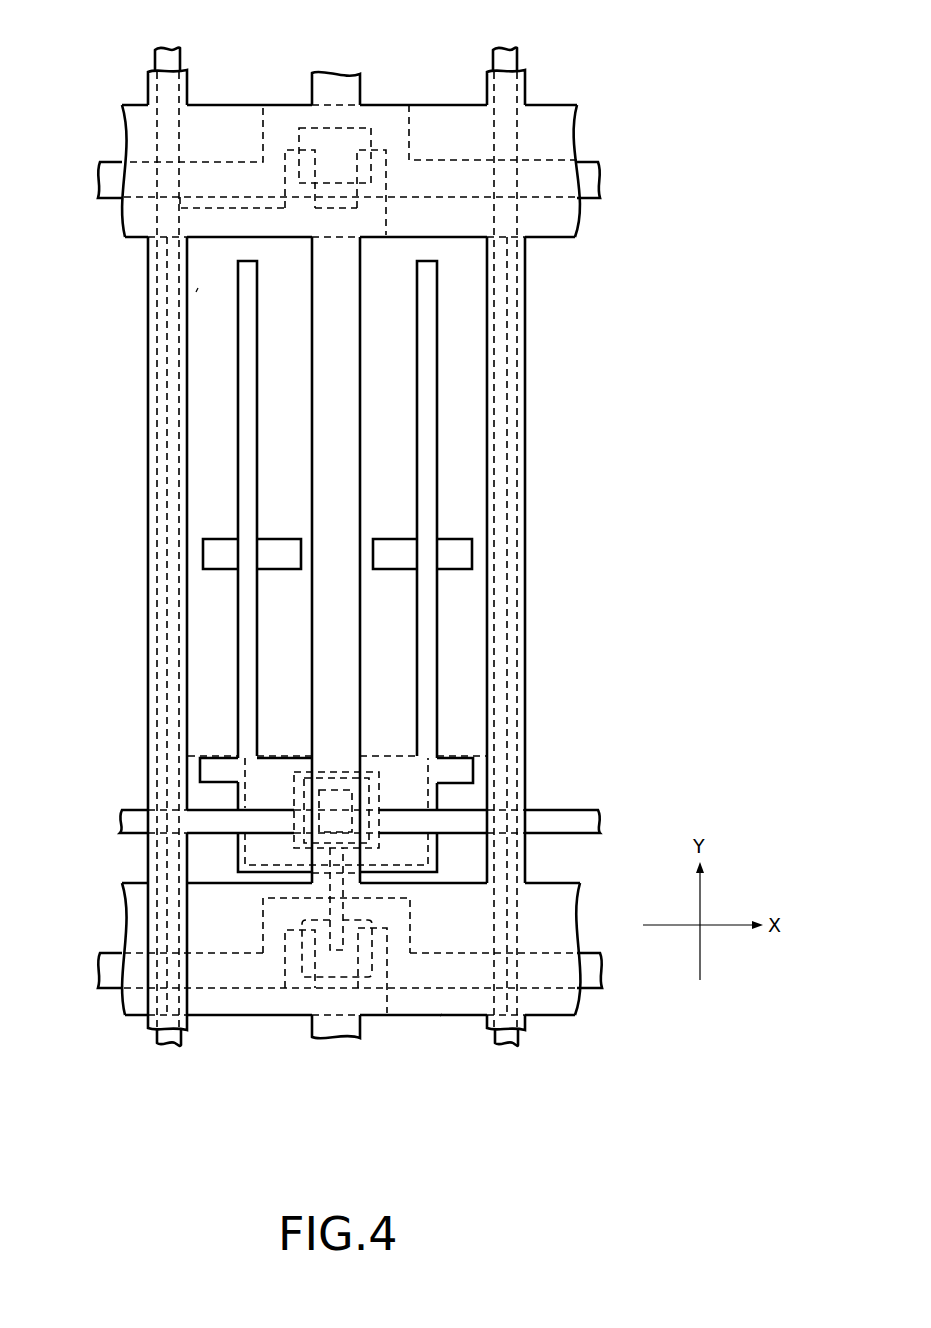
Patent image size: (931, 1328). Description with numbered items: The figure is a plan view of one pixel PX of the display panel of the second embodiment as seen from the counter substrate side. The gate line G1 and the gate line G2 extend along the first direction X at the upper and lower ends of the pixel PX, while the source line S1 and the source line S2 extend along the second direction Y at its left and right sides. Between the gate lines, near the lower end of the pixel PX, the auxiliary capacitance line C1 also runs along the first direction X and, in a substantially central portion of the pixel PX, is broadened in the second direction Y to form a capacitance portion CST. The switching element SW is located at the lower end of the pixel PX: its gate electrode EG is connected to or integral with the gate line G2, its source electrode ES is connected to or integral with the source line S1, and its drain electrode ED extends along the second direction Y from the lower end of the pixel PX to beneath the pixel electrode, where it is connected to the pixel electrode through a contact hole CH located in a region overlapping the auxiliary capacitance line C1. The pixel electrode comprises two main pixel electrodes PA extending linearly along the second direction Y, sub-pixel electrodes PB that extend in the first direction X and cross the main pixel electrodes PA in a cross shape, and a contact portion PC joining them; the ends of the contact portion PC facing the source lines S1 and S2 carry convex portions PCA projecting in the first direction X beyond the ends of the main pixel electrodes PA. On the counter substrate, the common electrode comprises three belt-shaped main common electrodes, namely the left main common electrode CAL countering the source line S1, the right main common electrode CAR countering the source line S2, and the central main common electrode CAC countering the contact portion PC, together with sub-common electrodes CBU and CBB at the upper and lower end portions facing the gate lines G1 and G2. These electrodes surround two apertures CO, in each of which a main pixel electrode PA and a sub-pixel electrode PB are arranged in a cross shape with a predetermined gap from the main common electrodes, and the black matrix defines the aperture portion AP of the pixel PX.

The source line S1 is at (167, 58).
The source line S2 is at (503, 56).
The gate line G1 is at (598, 177).
The gate line G2 is at (603, 975).
The sub-common electrode CBU is at (428, 112).
The sub-common electrode CBB is at (443, 1015).
The main common electrode CAL is at (147, 358).
The main common electrode CAC is at (353, 380).
The main common electrode CAR is at (526, 595).
The aperture CO is at (198, 290).
The pixel PX is at (507, 479).
The main pixel electrode PA is at (258, 448).
The sub-pixel electrode PB is at (280, 569).
The convex portion PCA is at (220, 765).
The capacitance portion CST is at (280, 762).
The contact hole CH is at (340, 777).
The aperture portion AP is at (478, 761).
The auxiliary capacitance line C1 is at (578, 820).
The drain electrode ED is at (337, 930).
The contact portion PC is at (438, 857).
The semiconductor layer SC is at (338, 950).
The gate electrode EG is at (408, 927).
The source electrode ES is at (382, 1003).
The switching element SW is at (365, 1055).